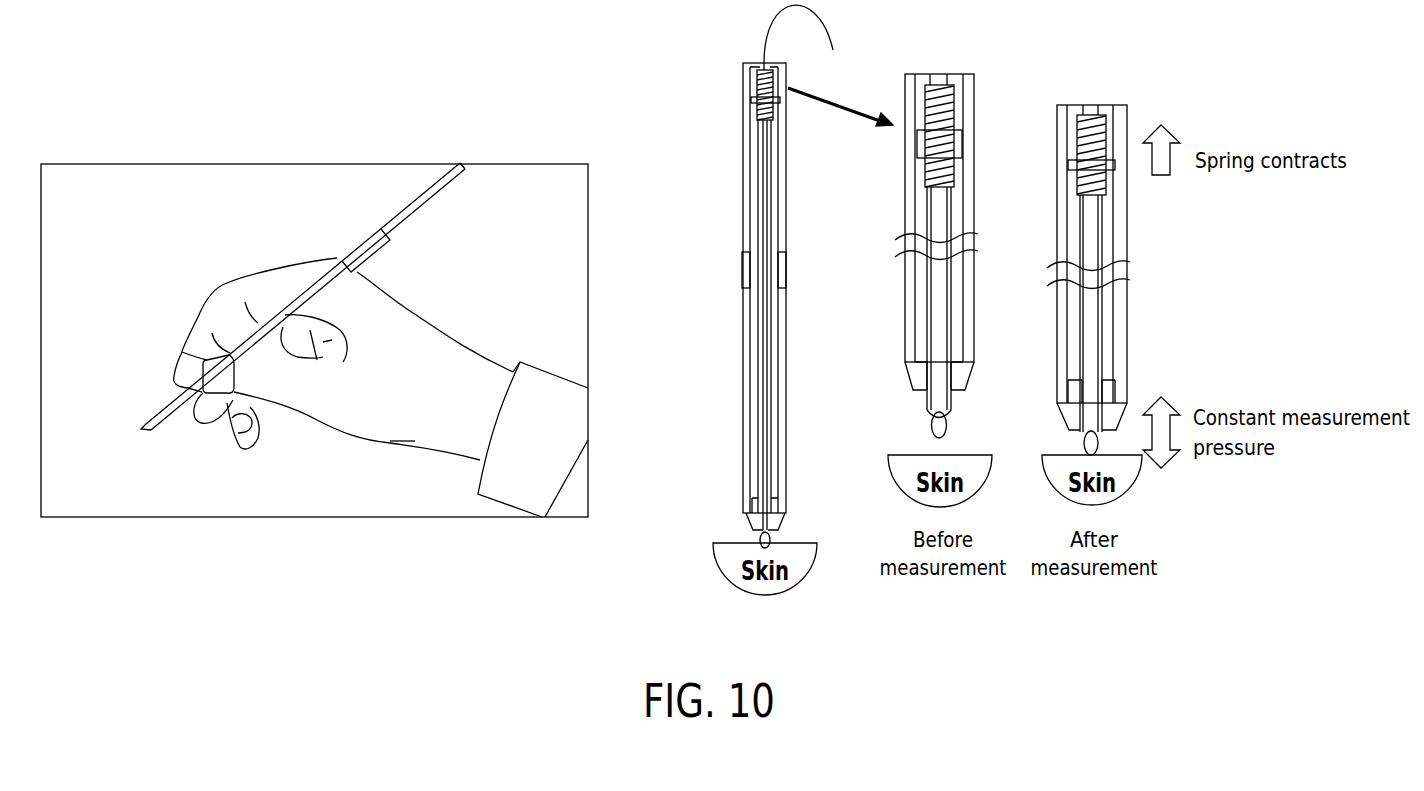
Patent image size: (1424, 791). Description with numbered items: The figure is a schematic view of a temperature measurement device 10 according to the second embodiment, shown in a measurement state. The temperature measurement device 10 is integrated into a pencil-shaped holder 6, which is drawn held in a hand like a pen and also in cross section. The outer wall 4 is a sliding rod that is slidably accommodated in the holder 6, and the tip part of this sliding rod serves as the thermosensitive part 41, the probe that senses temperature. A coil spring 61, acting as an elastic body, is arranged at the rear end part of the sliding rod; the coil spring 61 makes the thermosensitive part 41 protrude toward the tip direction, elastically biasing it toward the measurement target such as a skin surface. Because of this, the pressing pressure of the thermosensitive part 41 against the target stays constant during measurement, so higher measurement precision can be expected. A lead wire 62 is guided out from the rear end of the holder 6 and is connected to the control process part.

The temperature measurement device 10 is at (347, 352).
The holder 6 is at (743, 226).
The coil spring 61 is at (755, 118).
The lead wire 62 is at (762, 33).
The outer wall 4 is at (755, 335).
The thermosensitive part 41 is at (760, 538).